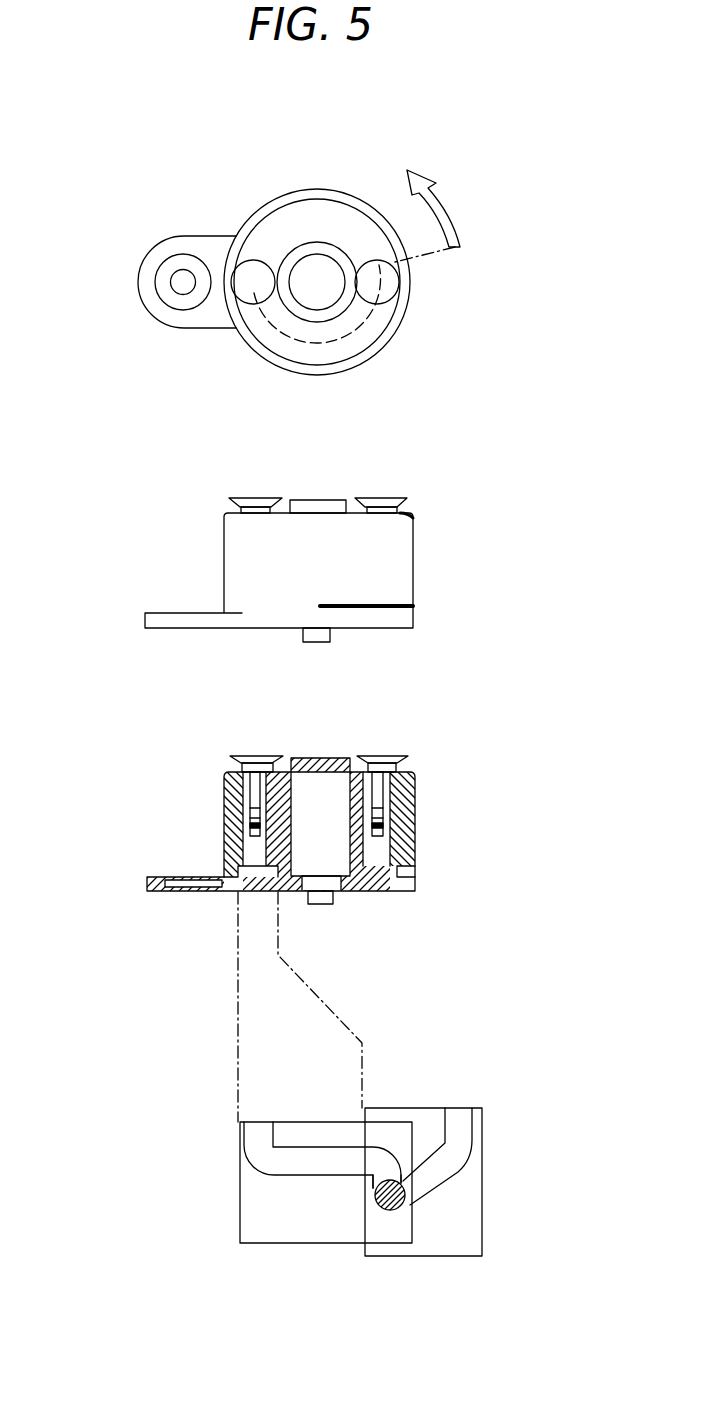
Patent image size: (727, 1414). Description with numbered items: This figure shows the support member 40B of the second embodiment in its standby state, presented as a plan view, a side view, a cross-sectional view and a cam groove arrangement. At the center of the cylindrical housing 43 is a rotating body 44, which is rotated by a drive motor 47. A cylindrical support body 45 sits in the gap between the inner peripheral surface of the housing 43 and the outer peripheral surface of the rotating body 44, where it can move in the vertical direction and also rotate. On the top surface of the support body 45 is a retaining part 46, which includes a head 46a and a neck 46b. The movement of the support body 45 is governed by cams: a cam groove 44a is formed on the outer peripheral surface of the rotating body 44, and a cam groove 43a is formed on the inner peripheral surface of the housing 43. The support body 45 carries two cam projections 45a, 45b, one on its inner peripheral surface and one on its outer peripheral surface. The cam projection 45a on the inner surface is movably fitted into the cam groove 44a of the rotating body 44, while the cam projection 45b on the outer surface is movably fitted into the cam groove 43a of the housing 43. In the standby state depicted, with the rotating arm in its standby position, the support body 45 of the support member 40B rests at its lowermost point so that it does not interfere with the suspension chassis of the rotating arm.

The support member 40B is at (178, 190).
The housing 43 is at (399, 314).
The cam groove 43a is at (302, 1162).
The rotating body 44 is at (347, 303).
The cam groove 44a is at (447, 1167).
The support body 45 is at (260, 327).
The cam projection 45a is at (392, 1210).
The cam projection 45b is at (367, 1192).
The retaining part 46 is at (375, 278).
The head 46a is at (380, 498).
The neck 46b is at (407, 515).
The drive motor 47 is at (306, 288).